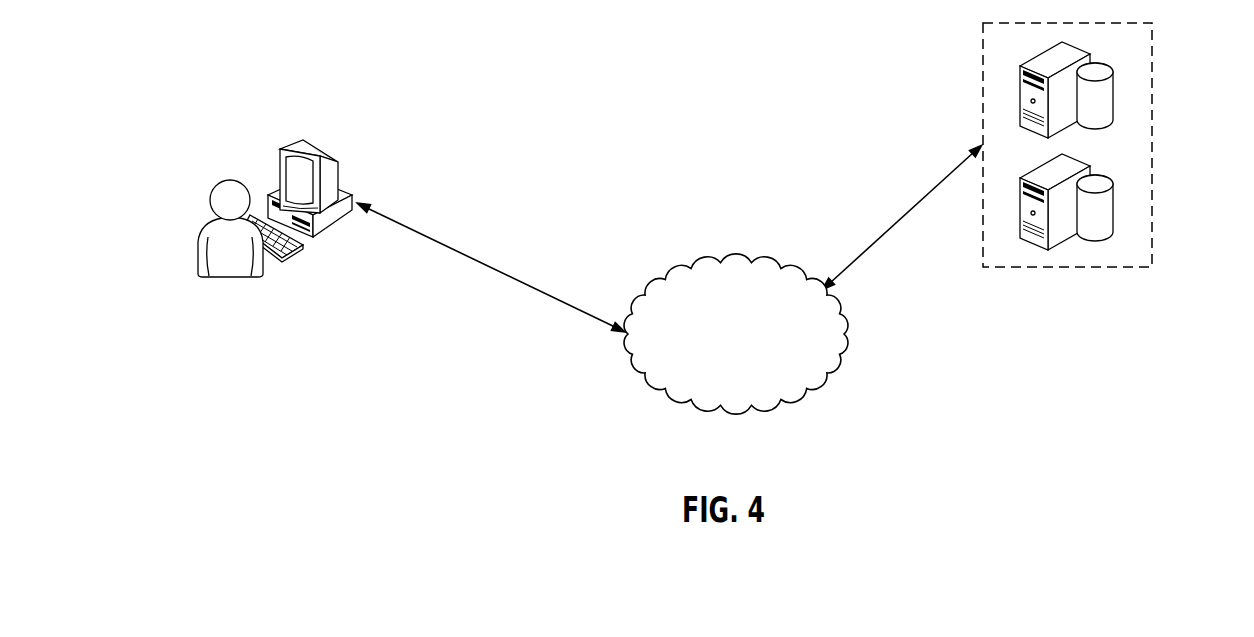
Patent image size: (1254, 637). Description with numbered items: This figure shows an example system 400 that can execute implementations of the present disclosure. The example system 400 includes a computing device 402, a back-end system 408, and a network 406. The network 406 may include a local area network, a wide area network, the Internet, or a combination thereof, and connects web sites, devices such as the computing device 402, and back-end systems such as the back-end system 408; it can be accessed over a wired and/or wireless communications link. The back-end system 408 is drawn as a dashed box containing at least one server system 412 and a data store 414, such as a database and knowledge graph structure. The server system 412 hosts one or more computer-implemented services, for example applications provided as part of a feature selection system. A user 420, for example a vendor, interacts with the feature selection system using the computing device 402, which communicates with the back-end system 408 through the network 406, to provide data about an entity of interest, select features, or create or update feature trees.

The example system 400 is at (551, 70).
The computing device 402 is at (280, 151).
The network 406 is at (735, 260).
The back-end system 408 is at (1152, 145).
The server system 412 is at (1020, 79).
The data store 414 is at (1113, 98).
The user 420 is at (211, 194).